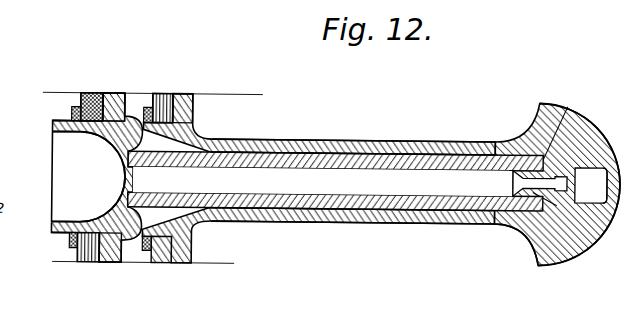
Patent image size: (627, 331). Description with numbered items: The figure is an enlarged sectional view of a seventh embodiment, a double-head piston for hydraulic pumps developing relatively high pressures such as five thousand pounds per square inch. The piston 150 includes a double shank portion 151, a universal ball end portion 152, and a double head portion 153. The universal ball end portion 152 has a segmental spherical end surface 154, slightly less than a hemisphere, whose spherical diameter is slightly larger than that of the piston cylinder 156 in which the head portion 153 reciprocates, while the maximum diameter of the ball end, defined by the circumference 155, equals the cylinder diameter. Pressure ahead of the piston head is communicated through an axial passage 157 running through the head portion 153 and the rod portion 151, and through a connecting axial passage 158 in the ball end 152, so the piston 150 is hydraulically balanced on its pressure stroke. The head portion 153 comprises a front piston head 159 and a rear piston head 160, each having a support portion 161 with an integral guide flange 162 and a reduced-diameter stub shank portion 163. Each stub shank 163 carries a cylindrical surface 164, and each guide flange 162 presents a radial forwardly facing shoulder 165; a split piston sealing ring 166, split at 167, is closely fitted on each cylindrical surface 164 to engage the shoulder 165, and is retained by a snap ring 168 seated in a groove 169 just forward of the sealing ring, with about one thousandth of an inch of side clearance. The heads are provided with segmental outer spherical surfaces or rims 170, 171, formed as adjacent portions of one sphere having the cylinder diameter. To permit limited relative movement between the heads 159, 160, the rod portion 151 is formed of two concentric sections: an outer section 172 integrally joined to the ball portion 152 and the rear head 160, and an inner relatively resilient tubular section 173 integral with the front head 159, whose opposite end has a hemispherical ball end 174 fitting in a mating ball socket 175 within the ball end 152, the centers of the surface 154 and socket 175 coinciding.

The piston 150 is at (370, 247).
The double shank portion 151 is at (349, 152).
The universal ball end portion 152 is at (571, 107).
The double head portion 153 is at (124, 81).
The segmental spherical end surface 154 is at (583, 248).
The circumference 155 is at (538, 102).
The piston cylinder 156 is at (240, 96).
The axial passage 157 is at (411, 206).
The connecting axial passage 158 is at (600, 164).
The front piston head 159 is at (98, 266).
The rear piston head 160 is at (184, 268).
The support portion 161 is at (193, 119).
The guide flange 162 is at (108, 94).
The stub shank portion 163 is at (75, 134).
The cylindrical surface 164 is at (88, 96).
The shoulder 165 is at (91, 94).
The split piston sealing ring 166 is at (80, 102).
The split 167 is at (150, 107).
The snap ring 168 is at (72, 112).
The groove 169 is at (55, 118).
The segmental outer spherical surface 170 is at (197, 93).
The segmental outer spherical surface 171 is at (78, 263).
The outer section 172 is at (338, 224).
The inner resilient tubular section 173 is at (289, 201).
The hemispherical ball end 174 is at (543, 200).
The ball socket 175 is at (594, 166).